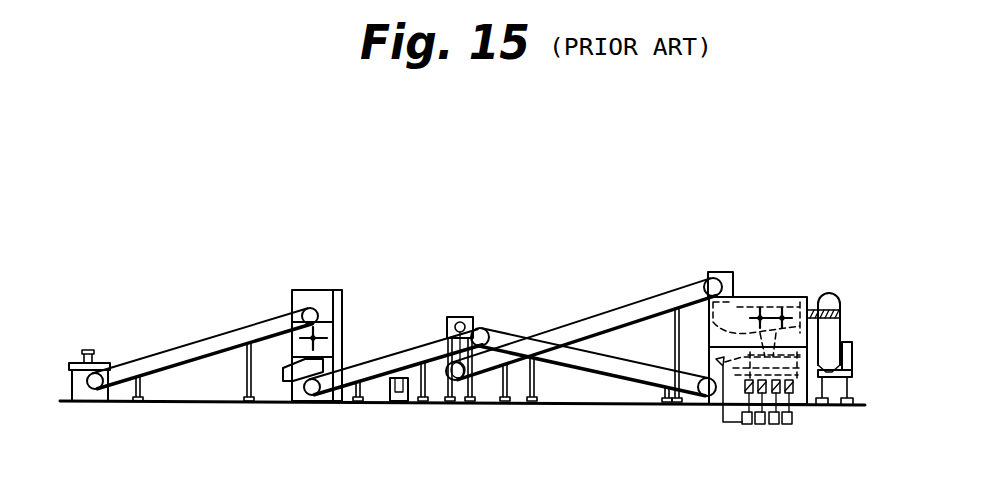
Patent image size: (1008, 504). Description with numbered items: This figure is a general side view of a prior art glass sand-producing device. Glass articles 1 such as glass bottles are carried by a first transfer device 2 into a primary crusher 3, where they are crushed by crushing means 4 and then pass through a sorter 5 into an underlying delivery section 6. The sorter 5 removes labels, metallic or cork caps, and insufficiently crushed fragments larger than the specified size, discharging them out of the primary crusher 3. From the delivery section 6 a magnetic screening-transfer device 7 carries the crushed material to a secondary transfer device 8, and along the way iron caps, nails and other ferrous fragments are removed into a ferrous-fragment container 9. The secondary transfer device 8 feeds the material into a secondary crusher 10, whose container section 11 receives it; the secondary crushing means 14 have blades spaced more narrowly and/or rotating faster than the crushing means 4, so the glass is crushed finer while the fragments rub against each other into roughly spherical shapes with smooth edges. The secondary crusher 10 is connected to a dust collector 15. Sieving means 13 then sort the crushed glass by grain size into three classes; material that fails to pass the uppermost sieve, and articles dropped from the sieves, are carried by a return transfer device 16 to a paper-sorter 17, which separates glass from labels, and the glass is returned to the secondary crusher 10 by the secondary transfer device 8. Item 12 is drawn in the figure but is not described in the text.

The glass articles 1 is at (88, 352).
The first transfer device 2 is at (190, 342).
The primary crusher 3 is at (342, 303).
The crushing means 4 is at (312, 308).
The sorter 5 is at (300, 375).
The delivery section 6 is at (342, 355).
The magnetic screening-transfer device 7 is at (420, 352).
The secondary transfer device 8 is at (562, 328).
The ferrous-fragment container 9 is at (393, 400).
The secondary crusher 10 is at (752, 297).
The container section 11 is at (716, 272).
The sorting chamber 12 is at (730, 300).
The sieving means 13 is at (787, 316).
The secondary crushing means 14 is at (796, 314).
The dust collector 15 is at (832, 298).
The return transfer device 16 is at (616, 372).
The paper-sorter 17 is at (458, 362).